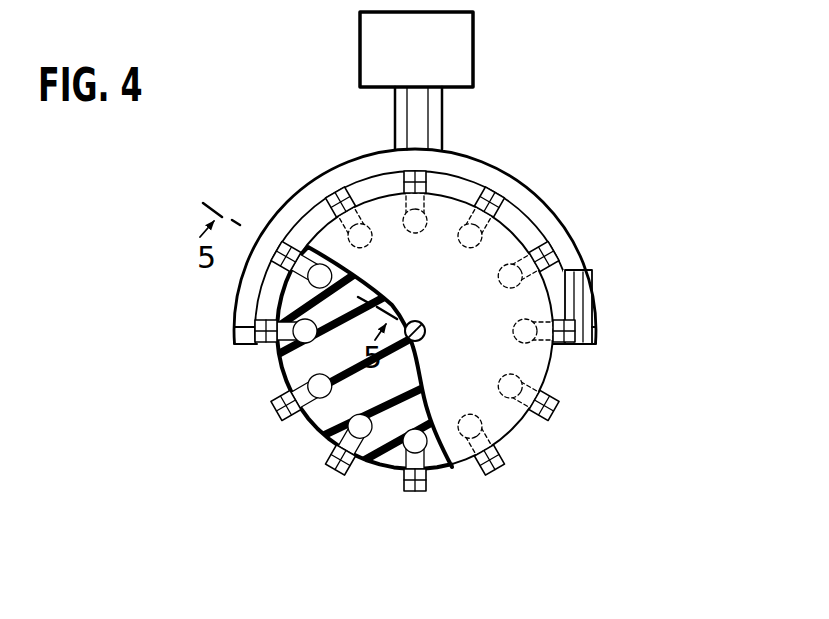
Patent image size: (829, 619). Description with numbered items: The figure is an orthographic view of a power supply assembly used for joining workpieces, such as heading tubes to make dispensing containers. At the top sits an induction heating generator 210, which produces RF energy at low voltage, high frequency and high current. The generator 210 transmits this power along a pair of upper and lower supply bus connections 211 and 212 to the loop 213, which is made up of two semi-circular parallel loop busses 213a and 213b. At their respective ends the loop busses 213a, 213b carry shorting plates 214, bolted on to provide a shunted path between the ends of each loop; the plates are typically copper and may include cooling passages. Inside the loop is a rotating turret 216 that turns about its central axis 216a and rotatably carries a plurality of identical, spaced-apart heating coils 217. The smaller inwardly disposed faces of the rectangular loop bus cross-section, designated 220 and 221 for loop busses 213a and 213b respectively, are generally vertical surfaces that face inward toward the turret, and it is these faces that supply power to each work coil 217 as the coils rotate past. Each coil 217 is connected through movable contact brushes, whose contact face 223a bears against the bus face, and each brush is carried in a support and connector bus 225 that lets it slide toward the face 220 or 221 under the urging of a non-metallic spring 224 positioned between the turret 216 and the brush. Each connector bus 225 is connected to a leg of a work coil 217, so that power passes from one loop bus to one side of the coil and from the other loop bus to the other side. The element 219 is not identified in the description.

The induction heating generator 210 is at (354, 62).
The upper supply bus connection 211 is at (443, 132).
The lower supply bus connection 212 is at (394, 131).
The loop 213 is at (330, 179).
The loop bus 213a is at (548, 212).
The loop bus 213b is at (598, 338).
The shorting plate 214 is at (233, 340).
The rotating turret 216 is at (515, 432).
The central axis 216a is at (424, 325).
The heating coil 217 is at (470, 249).
The wear strip 219 is at (585, 280).
The face 220 is at (556, 274).
The face 221 is at (569, 296).
The contact face 223a is at (421, 500).
The non-metallic spring 224 is at (540, 398).
The connector bus 225 is at (481, 473).